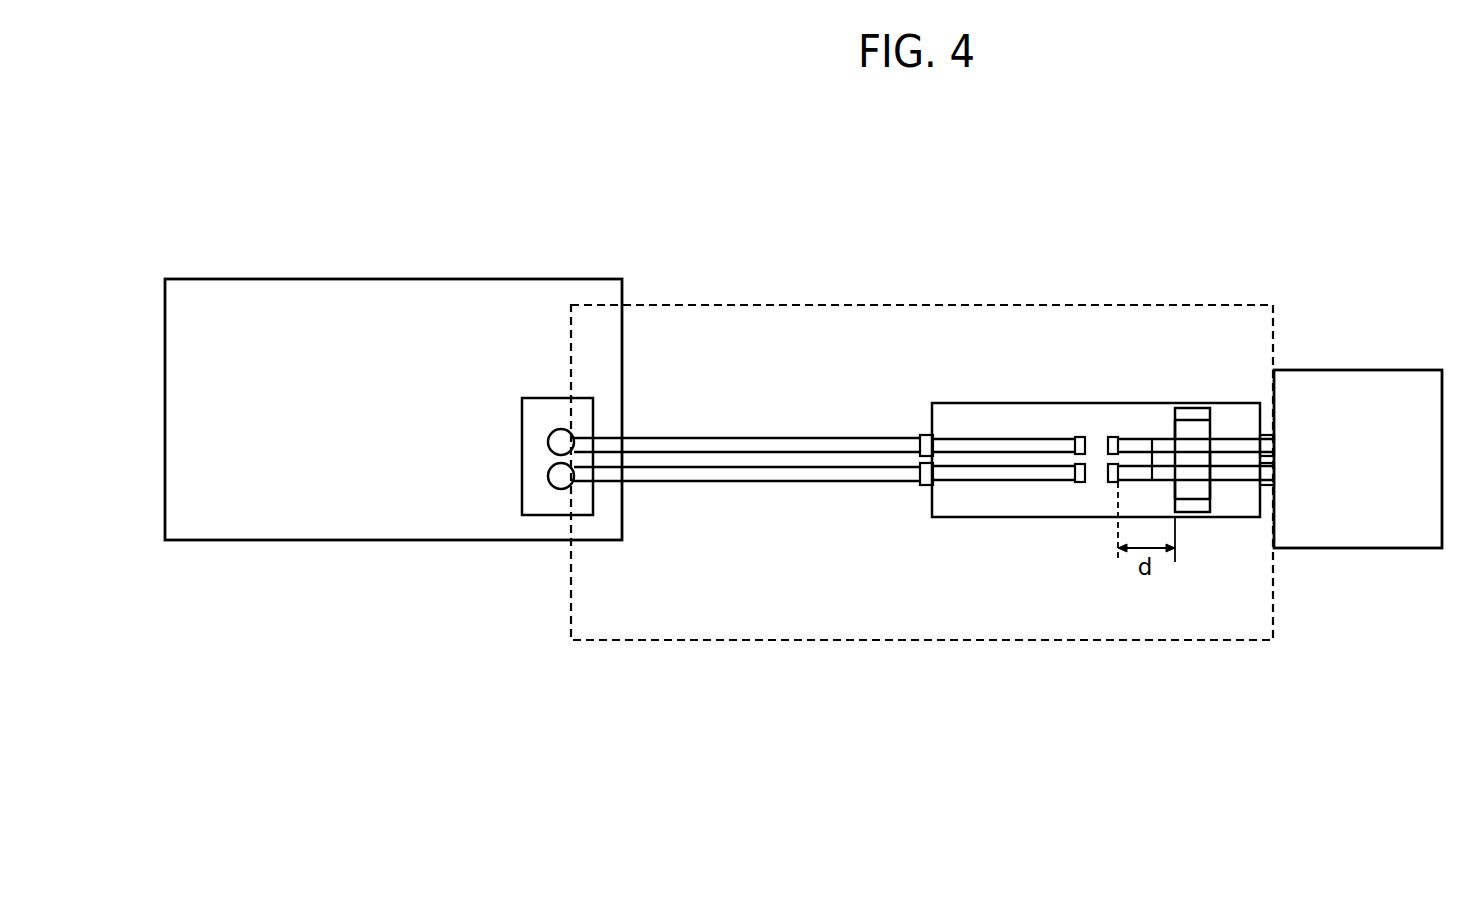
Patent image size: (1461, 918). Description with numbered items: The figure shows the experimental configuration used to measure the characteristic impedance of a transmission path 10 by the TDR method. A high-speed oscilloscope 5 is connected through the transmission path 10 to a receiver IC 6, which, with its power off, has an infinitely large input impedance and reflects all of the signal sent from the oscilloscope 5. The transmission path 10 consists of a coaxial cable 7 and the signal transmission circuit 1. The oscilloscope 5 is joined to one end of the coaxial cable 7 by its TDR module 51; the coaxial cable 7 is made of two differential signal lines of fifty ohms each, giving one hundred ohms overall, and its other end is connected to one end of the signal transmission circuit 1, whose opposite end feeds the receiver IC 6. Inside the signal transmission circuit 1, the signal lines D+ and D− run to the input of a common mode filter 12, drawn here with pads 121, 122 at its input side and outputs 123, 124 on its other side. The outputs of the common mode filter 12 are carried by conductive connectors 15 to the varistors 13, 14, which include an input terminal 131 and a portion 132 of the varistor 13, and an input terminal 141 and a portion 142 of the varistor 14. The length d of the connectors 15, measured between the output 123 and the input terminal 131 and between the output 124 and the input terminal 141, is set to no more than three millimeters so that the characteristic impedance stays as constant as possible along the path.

The signal transmission circuit 1 is at (975, 403).
The high-speed oscilloscope 5 is at (555, 279).
The TDR module 51 is at (548, 517).
The receiver IC 6 is at (1392, 370).
The coaxial cable 7 is at (777, 438).
The transmission path 10 is at (975, 305).
The common mode filter 12 is at (1092, 439).
The first pad (D+) 121 is at (1080, 438).
The first pad (D-) 122 is at (1080, 482).
The output of the common mode filter 123 is at (1115, 437).
The output of the common mode filter 124 is at (1113, 482).
The varistor 13 is at (1212, 430).
The input terminal of the varistor 131 is at (1173, 447).
The connector upper portion 132 is at (1190, 408).
The varistor 14 is at (1214, 500).
The input terminal of the varistor 141 is at (1214, 472).
The connector lower portion 142 is at (1197, 513).
The connectors 15 is at (1153, 438).